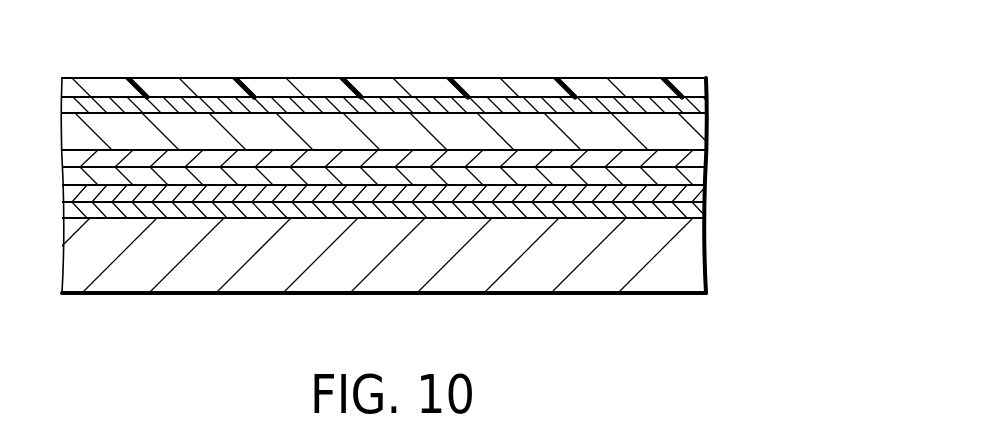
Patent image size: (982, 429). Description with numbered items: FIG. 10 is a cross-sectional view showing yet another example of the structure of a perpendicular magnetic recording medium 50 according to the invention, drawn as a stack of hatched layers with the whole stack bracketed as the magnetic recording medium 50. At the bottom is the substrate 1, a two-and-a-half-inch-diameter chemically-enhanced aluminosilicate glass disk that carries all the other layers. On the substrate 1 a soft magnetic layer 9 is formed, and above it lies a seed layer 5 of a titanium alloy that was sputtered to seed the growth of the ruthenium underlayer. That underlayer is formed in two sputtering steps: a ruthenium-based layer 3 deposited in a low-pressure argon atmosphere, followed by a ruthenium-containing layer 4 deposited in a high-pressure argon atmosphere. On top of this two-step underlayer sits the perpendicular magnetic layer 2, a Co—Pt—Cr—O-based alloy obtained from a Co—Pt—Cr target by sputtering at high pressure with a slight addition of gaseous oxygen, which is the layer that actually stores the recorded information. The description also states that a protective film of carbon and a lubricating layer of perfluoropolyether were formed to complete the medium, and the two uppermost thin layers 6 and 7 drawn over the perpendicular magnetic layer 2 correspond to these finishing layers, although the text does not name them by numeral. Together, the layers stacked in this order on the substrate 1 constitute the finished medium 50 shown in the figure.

The magnetic recording medium 50 is at (797, 38).
The protective layer 7 is at (693, 90).
The reflective layer 6 is at (692, 108).
The perpendicular magnetic layer 2 is at (692, 131).
The ruthenium-containing layer 4 is at (692, 158).
The ruthenium-based layer 3 is at (693, 177).
The seed layer 5 is at (693, 195).
The soft magnetic layer 9 is at (695, 214).
The substrate 1 is at (692, 265).